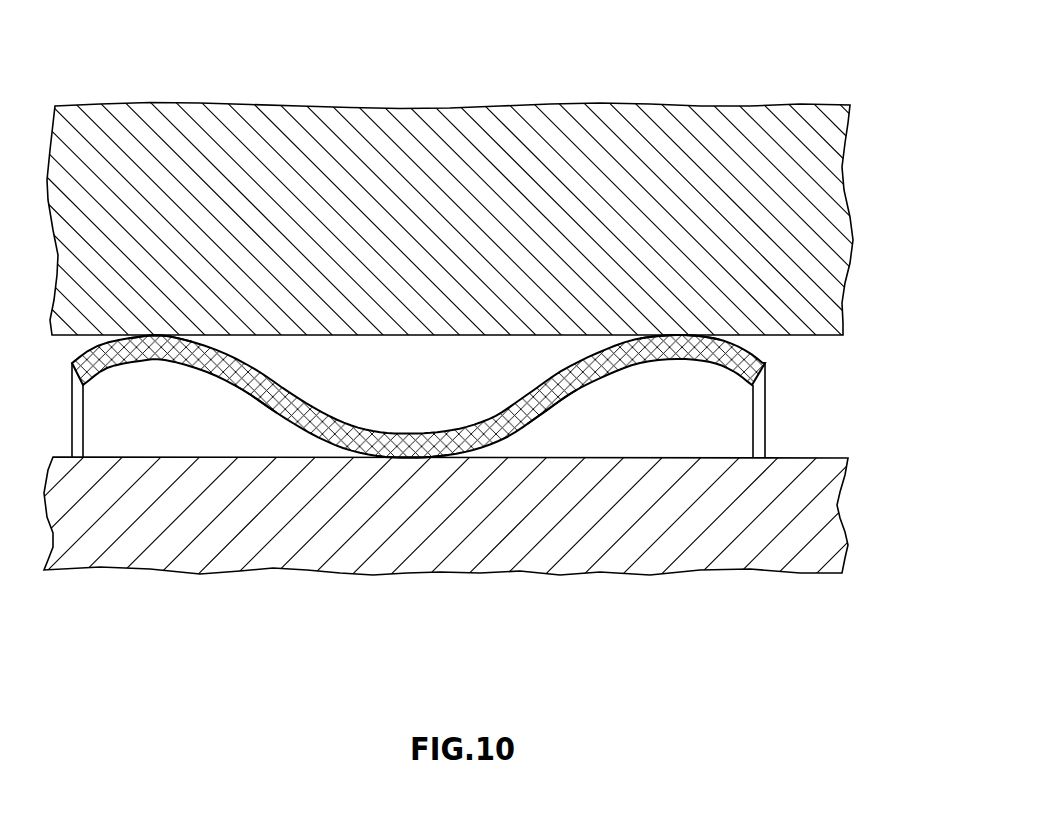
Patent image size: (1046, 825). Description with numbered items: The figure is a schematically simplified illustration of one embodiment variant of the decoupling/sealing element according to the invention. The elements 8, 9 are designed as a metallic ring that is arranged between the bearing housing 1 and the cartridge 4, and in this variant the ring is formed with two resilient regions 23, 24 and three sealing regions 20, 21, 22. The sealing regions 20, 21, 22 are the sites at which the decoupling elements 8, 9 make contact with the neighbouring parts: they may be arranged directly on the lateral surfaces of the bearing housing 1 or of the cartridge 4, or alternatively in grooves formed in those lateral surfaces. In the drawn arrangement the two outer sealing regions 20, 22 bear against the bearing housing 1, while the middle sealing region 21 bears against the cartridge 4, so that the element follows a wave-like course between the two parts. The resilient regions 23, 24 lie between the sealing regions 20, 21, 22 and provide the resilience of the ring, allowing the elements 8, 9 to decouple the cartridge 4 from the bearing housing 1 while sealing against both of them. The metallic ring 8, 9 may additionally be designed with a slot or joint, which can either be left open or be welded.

The bearing housing 1 is at (478, 125).
The cartridge 4 is at (738, 548).
The decoupling element 8 is at (418, 497).
The sealing element 9 is at (514, 449).
The first sealing region 20 is at (162, 327).
The second sealing region 21 is at (401, 466).
The third sealing region 22 is at (678, 327).
The first resilient region 23 is at (256, 402).
The second resilient region 24 is at (557, 414).